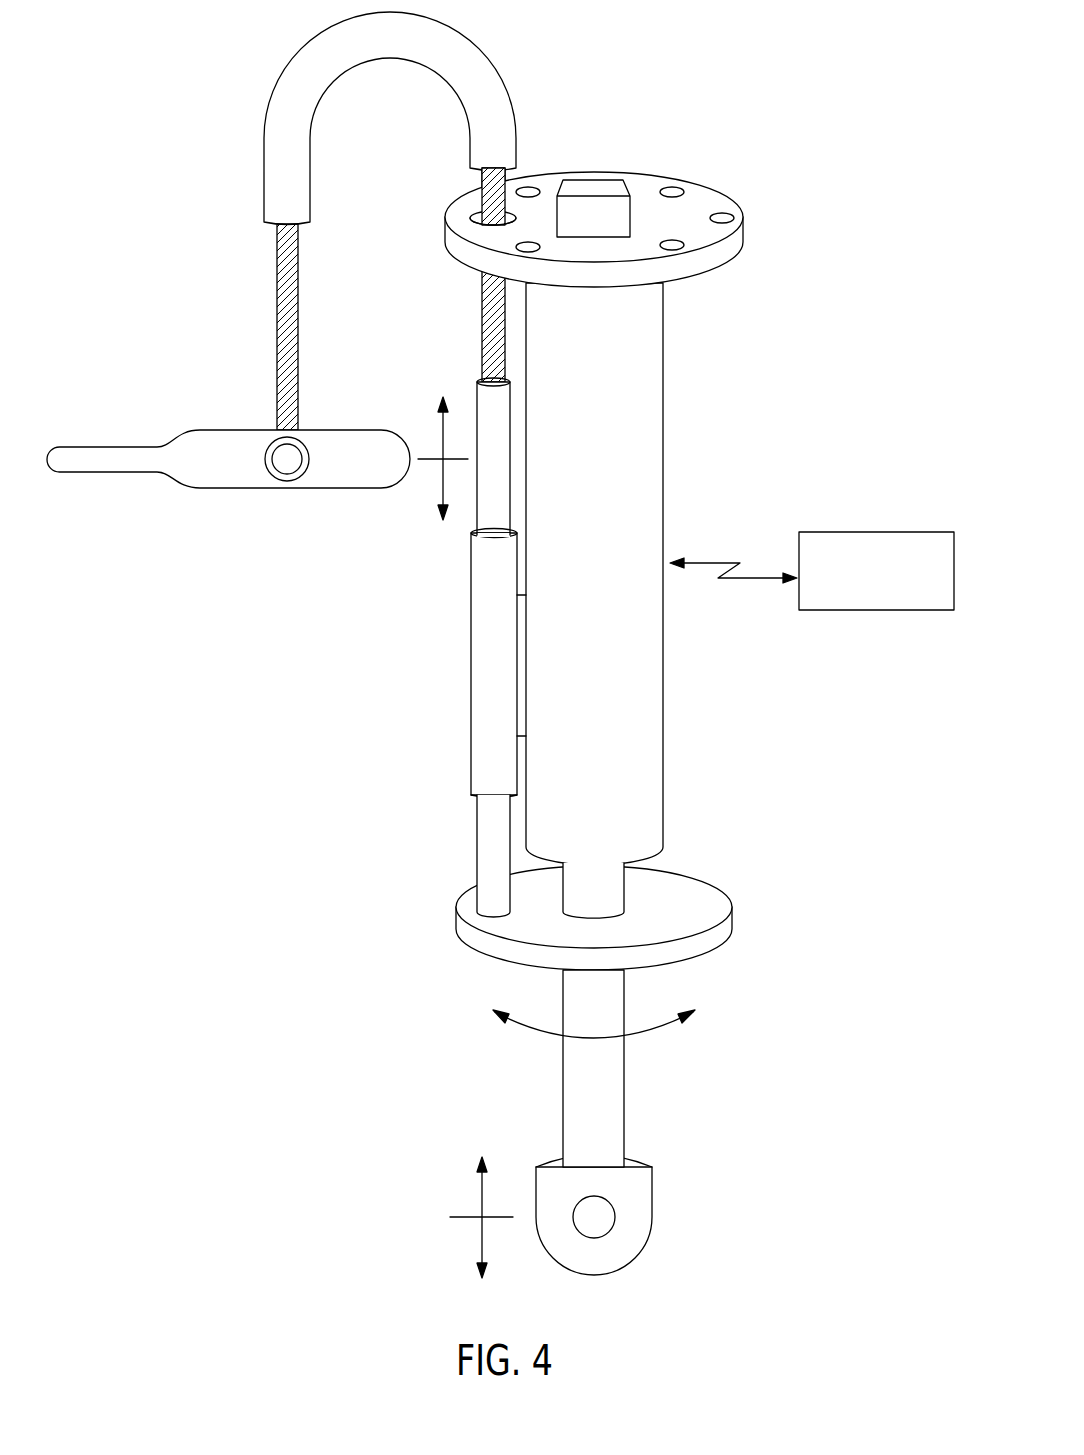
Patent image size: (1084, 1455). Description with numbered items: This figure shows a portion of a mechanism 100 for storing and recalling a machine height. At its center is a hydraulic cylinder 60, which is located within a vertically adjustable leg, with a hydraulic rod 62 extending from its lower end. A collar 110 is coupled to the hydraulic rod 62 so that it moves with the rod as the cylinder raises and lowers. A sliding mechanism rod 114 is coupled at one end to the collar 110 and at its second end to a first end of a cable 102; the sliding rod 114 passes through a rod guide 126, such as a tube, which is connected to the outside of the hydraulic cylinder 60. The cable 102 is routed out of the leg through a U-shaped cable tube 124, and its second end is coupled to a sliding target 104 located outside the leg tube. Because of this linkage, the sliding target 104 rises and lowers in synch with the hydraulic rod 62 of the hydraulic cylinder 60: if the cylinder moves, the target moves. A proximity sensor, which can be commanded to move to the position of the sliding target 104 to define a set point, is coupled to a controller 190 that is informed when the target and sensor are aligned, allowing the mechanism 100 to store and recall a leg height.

The mechanism 100 is at (777, 72).
The U-shaped cable tube 124 is at (448, 48).
The cable 102 is at (490, 332).
The sliding target 104 is at (233, 430).
The hydraulic cylinder 60 is at (638, 426).
The controller 190 is at (877, 532).
The rod guide 126 is at (487, 673).
The sliding mechanism rod 114 is at (495, 848).
The collar 110 is at (680, 897).
The hydraulic rod 62 is at (653, 1190).